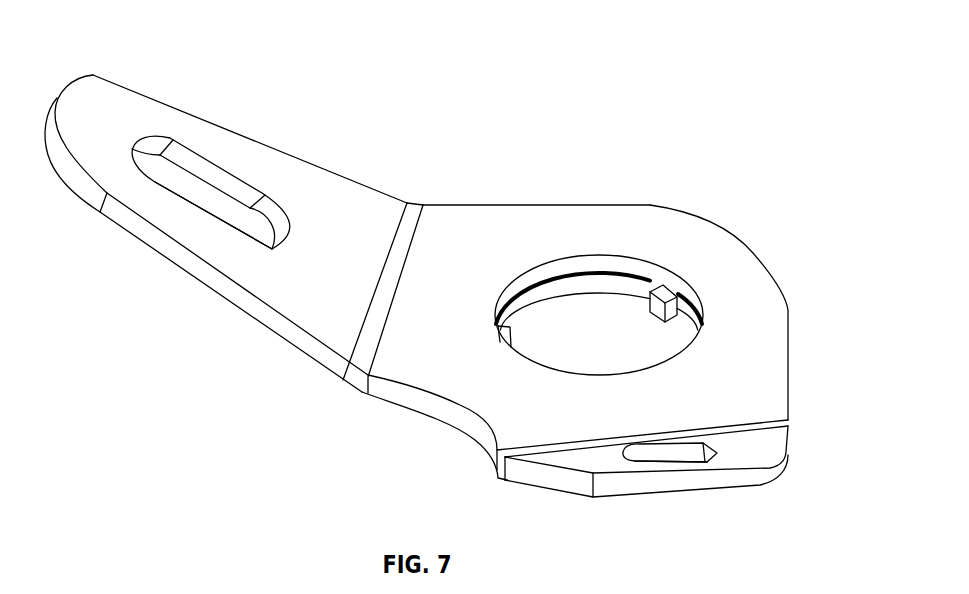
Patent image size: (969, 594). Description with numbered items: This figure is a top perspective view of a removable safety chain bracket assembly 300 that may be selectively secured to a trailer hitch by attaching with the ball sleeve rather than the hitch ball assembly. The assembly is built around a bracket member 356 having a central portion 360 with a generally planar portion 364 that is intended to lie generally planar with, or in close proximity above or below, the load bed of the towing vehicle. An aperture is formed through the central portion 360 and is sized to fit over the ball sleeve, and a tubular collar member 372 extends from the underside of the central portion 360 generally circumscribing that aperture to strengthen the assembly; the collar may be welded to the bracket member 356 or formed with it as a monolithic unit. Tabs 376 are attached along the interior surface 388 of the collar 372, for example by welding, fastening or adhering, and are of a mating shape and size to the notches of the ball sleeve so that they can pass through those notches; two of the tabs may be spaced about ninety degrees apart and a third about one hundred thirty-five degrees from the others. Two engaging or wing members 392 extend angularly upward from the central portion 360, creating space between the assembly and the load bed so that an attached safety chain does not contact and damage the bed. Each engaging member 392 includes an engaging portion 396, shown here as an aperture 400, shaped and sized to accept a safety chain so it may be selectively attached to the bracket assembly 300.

The removable safety chain bracket assembly 300 is at (449, 284).
The bracket member 356 is at (718, 240).
The central portion 360 is at (457, 223).
The generally planar portion 364 is at (657, 225).
The tubular collar member 372 is at (543, 293).
The tab 376 is at (667, 297).
The interior surface 388 is at (603, 287).
The engaging member 392 is at (107, 107).
The engaging portion 396 is at (203, 157).
The aperture 400 is at (182, 200).